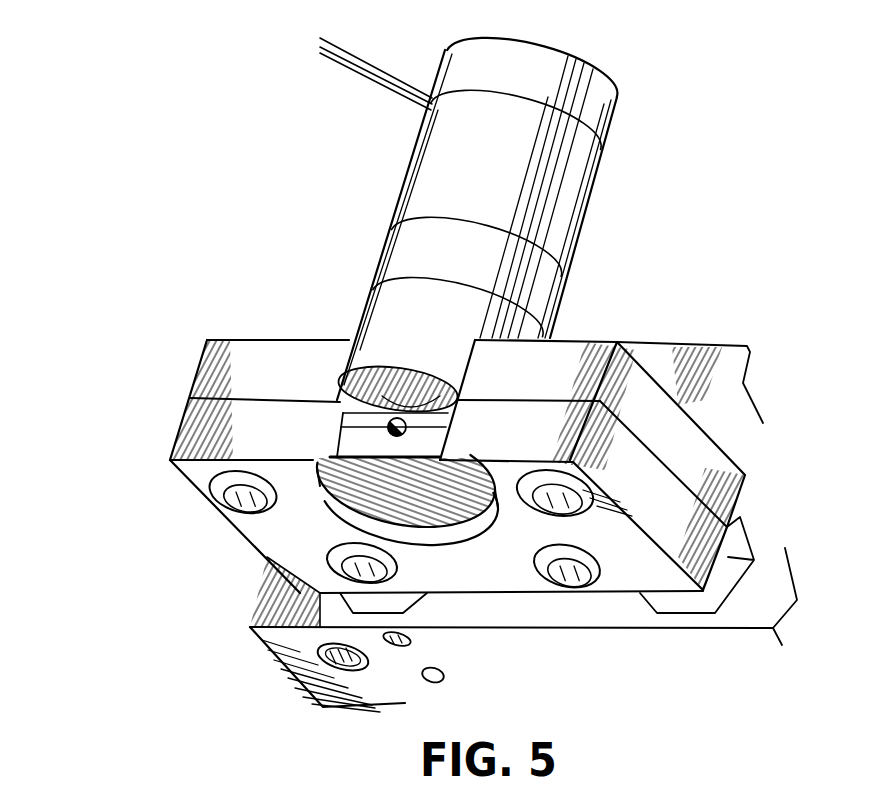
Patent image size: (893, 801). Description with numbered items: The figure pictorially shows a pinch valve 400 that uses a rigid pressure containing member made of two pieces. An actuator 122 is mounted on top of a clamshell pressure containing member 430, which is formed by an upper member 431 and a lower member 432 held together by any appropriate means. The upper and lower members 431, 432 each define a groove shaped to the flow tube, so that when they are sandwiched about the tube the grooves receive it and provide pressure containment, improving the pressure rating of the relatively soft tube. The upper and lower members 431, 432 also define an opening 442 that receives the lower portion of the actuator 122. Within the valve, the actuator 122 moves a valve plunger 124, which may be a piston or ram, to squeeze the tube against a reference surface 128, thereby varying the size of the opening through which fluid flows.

The actuator 122 is at (562, 47).
The valve plunger 124 is at (349, 378).
The reference surface 128 is at (407, 433).
The pinch valve 400 is at (658, 205).
The clamshell pressure containing member 430 is at (567, 348).
The upper member 431 is at (230, 350).
The lower member 432 is at (233, 513).
The opening 442 is at (430, 537).